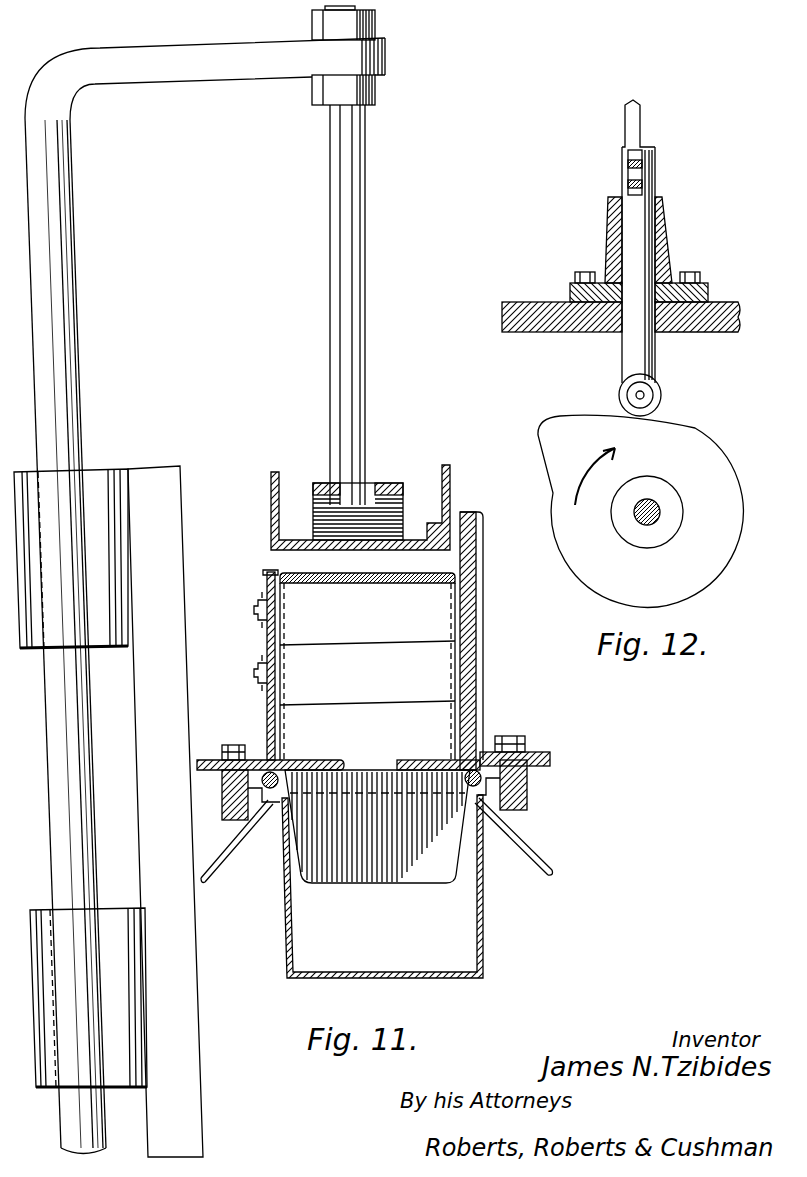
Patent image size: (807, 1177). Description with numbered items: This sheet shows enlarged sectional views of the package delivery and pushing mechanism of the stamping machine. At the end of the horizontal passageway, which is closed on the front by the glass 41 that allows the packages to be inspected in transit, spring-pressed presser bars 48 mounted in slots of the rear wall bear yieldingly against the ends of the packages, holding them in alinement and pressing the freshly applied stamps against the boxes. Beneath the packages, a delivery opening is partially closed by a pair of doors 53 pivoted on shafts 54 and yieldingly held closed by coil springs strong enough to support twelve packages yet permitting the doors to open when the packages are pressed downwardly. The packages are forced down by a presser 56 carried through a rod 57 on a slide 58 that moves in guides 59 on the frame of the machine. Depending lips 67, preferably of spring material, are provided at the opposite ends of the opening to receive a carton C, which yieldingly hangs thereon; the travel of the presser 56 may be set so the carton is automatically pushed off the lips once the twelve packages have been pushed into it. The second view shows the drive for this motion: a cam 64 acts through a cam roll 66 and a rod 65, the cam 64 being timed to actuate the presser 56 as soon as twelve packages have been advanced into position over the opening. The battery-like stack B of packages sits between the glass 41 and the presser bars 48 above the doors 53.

In FIG. 11, the slide 58 is at (50, 243).
In FIG. 11, the rod 57 is at (356, 242).
In FIG. 11, the guides 59 is at (95, 469).
In FIG. 11, the presser 56 is at (413, 472).
In FIG. 11, the glass 41 is at (468, 586).
In FIG. 11, the presser bars 48 is at (258, 678).
In FIG. 11, the doors 53 is at (415, 762).
In FIG. 11, the shafts 54 is at (250, 778).
In FIG. 11, the depending lips 67 is at (383, 860).
In FIG. 11, the battery B is at (437, 614).
In FIG. 11, the cartons C is at (483, 942).
In FIG. 12, the rod 65 is at (632, 338).
In FIG. 12, the cam roll 66 is at (662, 398).
In FIG. 12, the cam 64 is at (693, 441).